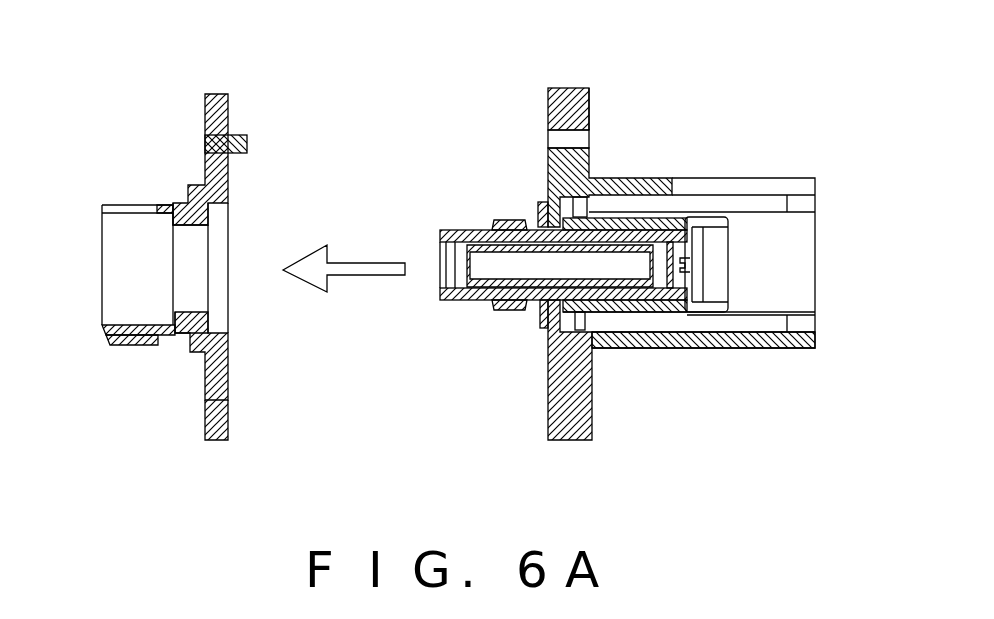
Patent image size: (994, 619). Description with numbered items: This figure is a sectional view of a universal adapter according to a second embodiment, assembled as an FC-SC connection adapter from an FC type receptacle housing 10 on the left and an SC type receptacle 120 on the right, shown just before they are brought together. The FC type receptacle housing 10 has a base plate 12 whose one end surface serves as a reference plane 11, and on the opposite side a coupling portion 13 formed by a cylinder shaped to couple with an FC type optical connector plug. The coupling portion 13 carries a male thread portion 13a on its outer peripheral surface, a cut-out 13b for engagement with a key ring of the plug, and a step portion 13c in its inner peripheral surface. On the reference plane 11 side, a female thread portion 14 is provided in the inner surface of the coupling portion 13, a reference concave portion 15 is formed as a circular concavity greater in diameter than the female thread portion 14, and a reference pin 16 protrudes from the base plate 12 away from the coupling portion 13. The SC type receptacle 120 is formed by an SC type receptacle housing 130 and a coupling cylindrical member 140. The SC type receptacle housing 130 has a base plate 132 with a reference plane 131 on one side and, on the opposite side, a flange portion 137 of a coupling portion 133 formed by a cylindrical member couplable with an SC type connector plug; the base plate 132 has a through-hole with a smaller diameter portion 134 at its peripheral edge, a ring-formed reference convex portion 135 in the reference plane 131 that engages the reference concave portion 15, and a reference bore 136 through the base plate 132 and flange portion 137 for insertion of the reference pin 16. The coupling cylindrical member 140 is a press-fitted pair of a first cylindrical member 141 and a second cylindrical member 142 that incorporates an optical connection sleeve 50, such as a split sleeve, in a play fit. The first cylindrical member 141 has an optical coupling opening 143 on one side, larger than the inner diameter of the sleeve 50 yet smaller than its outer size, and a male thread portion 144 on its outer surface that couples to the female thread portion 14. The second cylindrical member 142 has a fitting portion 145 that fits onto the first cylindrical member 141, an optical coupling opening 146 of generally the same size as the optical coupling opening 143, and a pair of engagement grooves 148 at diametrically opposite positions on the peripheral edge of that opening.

The FC type receptacle housing 10 is at (118, 115).
The reference plane 11 is at (229, 400).
The base plate 12 is at (221, 441).
The coupling portion 13 is at (102, 332).
The male thread portion 13a is at (145, 345).
The cut-out 13b is at (115, 207).
The step portion 13c is at (173, 321).
The female thread portion 14 is at (211, 303).
The reference concave portion 15 is at (229, 209).
The reference pin 16 is at (238, 136).
The SC type receptacle 120 is at (478, 108).
The SC type receptacle housing 130 is at (608, 170).
The reference plane 131 is at (548, 418).
The base plate 132 is at (562, 88).
The coupling portion 133 is at (782, 350).
The smaller diameter portion 134 is at (545, 325).
The reference convex portion 135 is at (542, 203).
The reference bore 136 is at (580, 139).
The flange portion 137 is at (577, 103).
The coupling cylindrical member 140 is at (475, 212).
The first cylindrical member 141 is at (455, 233).
The second cylindrical member 142 is at (662, 231).
The optical coupling opening 143 is at (444, 287).
The male thread portion 144 is at (497, 318).
The fitting portion 145 is at (615, 220).
The optical coupling opening 146 is at (693, 287).
The engagement grooves 148 is at (692, 262).
The optical connection sleeve 50 is at (635, 320).